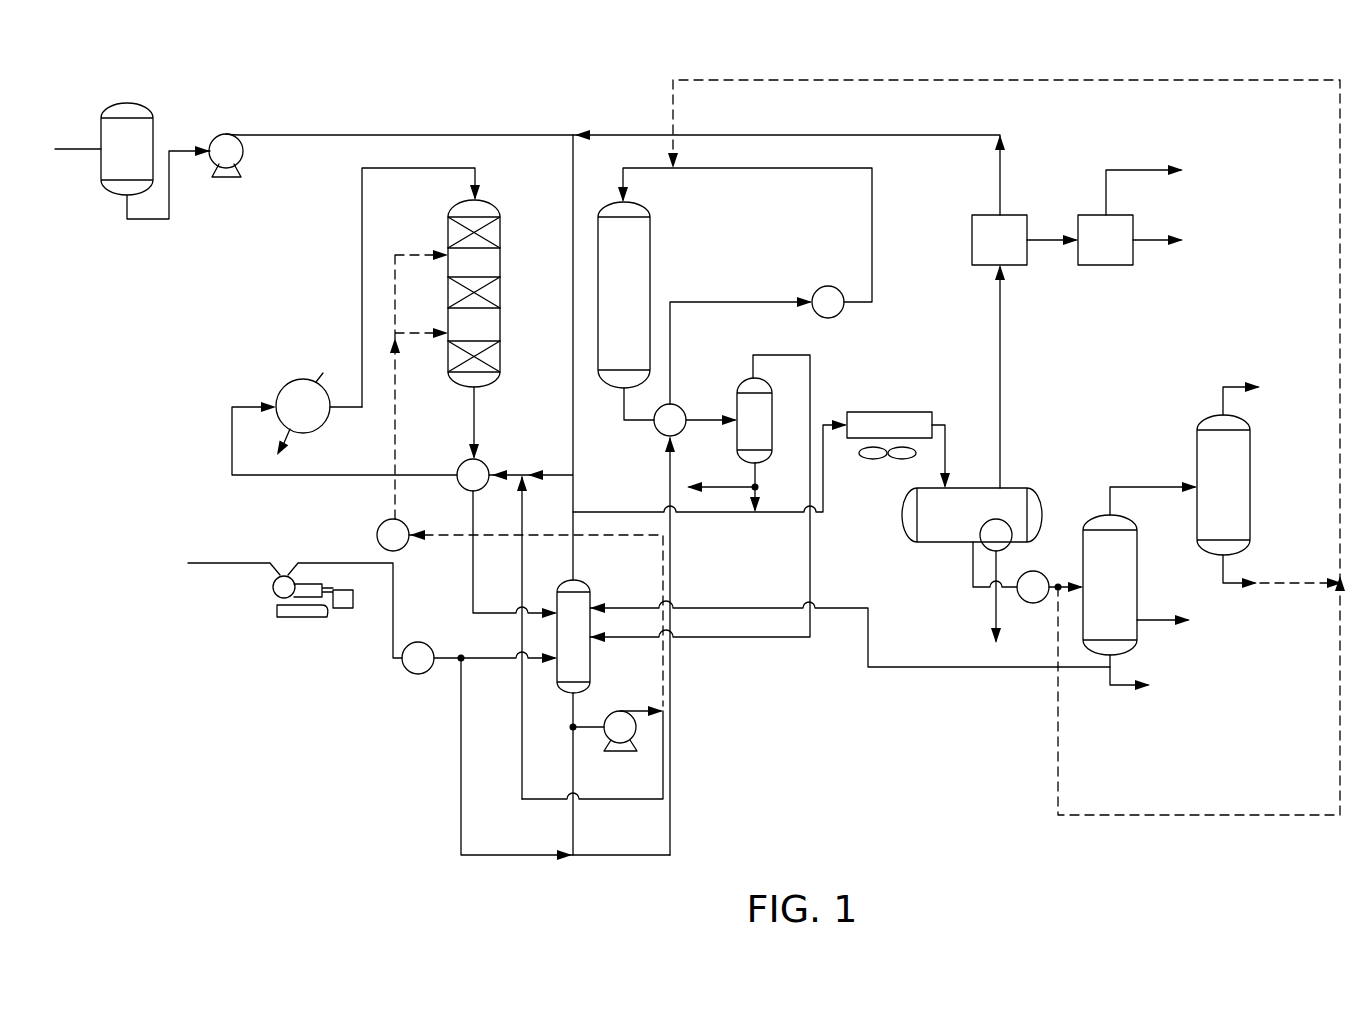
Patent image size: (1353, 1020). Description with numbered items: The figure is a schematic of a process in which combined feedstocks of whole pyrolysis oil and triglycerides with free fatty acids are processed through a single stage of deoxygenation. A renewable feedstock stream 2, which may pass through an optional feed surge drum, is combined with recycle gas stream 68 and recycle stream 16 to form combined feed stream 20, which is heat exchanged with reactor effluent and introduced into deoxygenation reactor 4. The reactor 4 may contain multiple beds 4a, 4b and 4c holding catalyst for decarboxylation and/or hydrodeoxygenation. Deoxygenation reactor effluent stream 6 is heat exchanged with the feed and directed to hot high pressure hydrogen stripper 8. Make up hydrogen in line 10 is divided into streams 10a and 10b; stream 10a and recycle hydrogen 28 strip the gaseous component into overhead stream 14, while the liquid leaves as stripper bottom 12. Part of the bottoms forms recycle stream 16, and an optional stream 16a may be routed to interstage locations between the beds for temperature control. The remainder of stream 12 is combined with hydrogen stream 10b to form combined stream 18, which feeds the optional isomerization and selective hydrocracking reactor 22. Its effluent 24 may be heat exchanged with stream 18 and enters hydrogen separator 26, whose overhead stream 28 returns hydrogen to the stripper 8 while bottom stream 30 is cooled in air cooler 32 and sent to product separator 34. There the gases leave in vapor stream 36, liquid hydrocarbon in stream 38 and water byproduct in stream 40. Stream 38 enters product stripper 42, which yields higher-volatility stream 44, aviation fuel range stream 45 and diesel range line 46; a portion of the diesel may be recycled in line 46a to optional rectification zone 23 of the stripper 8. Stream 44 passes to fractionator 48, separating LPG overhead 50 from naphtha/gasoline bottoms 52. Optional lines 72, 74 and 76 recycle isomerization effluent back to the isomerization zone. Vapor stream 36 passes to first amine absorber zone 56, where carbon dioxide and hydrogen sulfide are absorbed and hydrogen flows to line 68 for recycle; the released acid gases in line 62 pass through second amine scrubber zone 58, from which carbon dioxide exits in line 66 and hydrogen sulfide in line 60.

The renewable feedstock stream 2 is at (80, 148).
The deoxygenation reactor 4 is at (506, 280).
The catalyst bed 4a is at (502, 233).
The catalyst bed 4b is at (502, 293).
The catalyst bed 4c is at (502, 352).
The deoxygenation reactor effluent stream 6 is at (478, 420).
The hot high pressure hydrogen stripper 8 is at (583, 580).
The make up hydrogen line 10 is at (332, 563).
The make up hydrogen stream 10a is at (489, 663).
The hydrogen stream 10b is at (460, 762).
The hot high pressure hydrogen stripper bottom 12 is at (571, 752).
The hot high pressure hydrogen stripper overhead stream 14 is at (590, 510).
The recycle stream 16 is at (521, 560).
The optional stream 16a is at (397, 411).
The combined stream 18 is at (748, 175).
The combined feed stream 20 is at (362, 213).
The isomerization and selective hydrocracking reactor 22 is at (635, 202).
The rectification zone 23 is at (565, 603).
The isomerization reactor effluent 24 is at (637, 425).
The hydrogen separator 26 is at (772, 405).
The overhead stream 28 is at (812, 372).
The bottom stream 30 is at (760, 475).
The air cooler 32 is at (883, 410).
The product separator 34 is at (1013, 488).
The vapor stream 36 is at (1000, 312).
The liquid hydrocarbon stream 38 is at (972, 575).
The water byproduct stream 40 is at (998, 617).
The product stripper 42 is at (1137, 585).
The stream of higher relative volatility components 44 is at (1152, 485).
The aviation fuel stream 45 is at (1155, 623).
The diesel range component line 46 is at (1120, 688).
The diesel recycle line 46a is at (893, 668).
The fractionator 48 is at (1242, 415).
The LPG overhead 50 is at (1233, 385).
The naphtha/gasoline bottoms 52 is at (1232, 587).
The first amine absorber zone 56 is at (990, 215).
The second amine scrubber zone 58 is at (1106, 265).
The hydrogen sulfide line 60 is at (1153, 235).
The carbon dioxide and hydrogen sulfide line 62 is at (1052, 235).
The carbon dioxide line 66 is at (1145, 168).
The recycle gas stream 68 is at (1000, 158).
The optional recycle line 72 is at (710, 480).
The optional recycle line 74 is at (1170, 820).
The optional recycle line 76 is at (1297, 580).